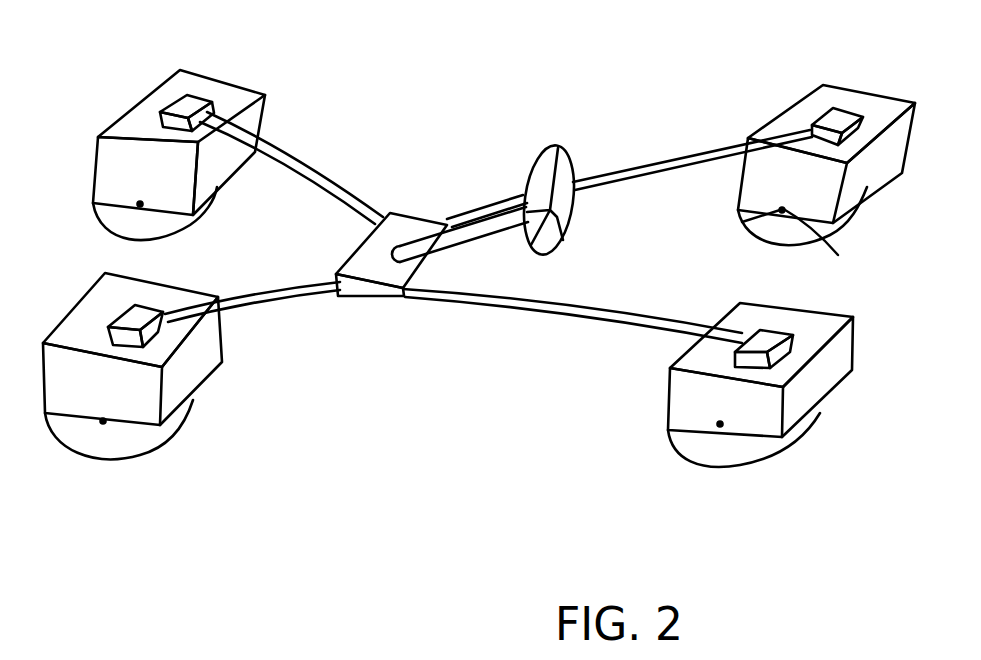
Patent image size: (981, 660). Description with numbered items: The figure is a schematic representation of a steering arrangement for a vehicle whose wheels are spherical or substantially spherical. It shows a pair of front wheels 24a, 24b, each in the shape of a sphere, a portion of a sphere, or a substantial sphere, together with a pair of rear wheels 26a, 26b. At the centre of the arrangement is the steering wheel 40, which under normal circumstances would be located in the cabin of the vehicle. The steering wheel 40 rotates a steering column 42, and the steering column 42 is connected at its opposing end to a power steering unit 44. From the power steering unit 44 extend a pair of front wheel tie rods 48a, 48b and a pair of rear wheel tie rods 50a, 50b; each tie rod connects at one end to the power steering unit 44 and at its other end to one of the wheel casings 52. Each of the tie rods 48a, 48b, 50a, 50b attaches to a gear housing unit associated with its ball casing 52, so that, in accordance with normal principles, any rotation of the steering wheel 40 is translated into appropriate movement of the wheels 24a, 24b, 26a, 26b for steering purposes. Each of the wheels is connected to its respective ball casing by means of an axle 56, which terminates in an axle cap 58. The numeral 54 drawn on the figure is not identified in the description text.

The front wheel 24a is at (180, 430).
The front wheel 24b is at (175, 227).
The rear wheel 26a is at (727, 457).
The rear wheel 26b is at (852, 222).
The steering wheel 40 is at (540, 253).
The steering column 42 is at (453, 247).
The power steering unit 44 is at (373, 278).
The front wheel tie rod 48a is at (272, 298).
The front wheel tie rod 48b is at (310, 173).
The rear wheel tie rod 50a is at (600, 322).
The rear wheel tie rod 50b is at (640, 162).
The wheel casing 52 is at (847, 95).
The wheel motor 54 is at (198, 102).
The axle 56 is at (824, 247).
The axle cap 58 is at (782, 212).